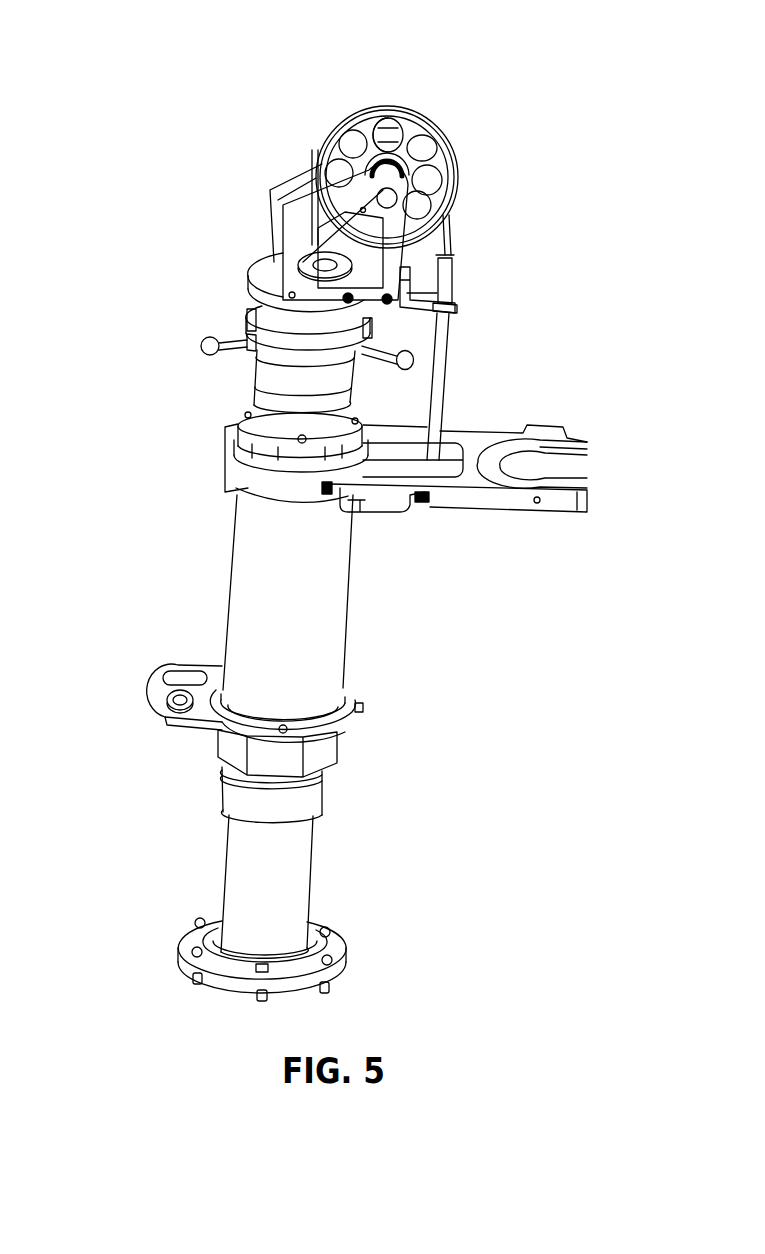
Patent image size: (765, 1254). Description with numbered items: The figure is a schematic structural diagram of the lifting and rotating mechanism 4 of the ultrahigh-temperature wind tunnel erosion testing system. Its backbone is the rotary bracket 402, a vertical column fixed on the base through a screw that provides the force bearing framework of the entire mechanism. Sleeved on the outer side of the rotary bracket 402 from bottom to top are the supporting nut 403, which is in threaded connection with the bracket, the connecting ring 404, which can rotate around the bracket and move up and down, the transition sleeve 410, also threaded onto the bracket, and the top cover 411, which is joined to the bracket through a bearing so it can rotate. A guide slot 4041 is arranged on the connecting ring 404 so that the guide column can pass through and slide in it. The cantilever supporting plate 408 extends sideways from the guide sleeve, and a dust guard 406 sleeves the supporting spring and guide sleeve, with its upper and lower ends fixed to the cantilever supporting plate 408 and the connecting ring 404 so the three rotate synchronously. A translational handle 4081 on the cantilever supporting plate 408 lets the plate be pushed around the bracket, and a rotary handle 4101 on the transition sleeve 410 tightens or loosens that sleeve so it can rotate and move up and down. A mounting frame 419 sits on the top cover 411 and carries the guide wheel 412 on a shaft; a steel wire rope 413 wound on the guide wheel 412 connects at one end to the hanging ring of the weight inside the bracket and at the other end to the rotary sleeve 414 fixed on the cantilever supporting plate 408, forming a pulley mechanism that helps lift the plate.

The lifting and rotating mechanism 4 is at (125, 193).
The rotary bracket 402 is at (293, 877).
The supporting nut 403 is at (313, 797).
The connecting ring 404 is at (365, 715).
The guide slot 4041 is at (168, 668).
The dust guard 406 is at (237, 578).
The cantilever supporting plate 408 is at (512, 500).
The translational handle 4081 is at (380, 512).
The transition sleeve 410 is at (257, 380).
The rotary handle 4101 is at (200, 344).
The top cover 411 is at (248, 312).
The guide wheel 412 is at (462, 157).
The steel wire rope 413 is at (452, 228).
The rotary sleeve 414 is at (438, 377).
The mounting frame 419 is at (290, 210).